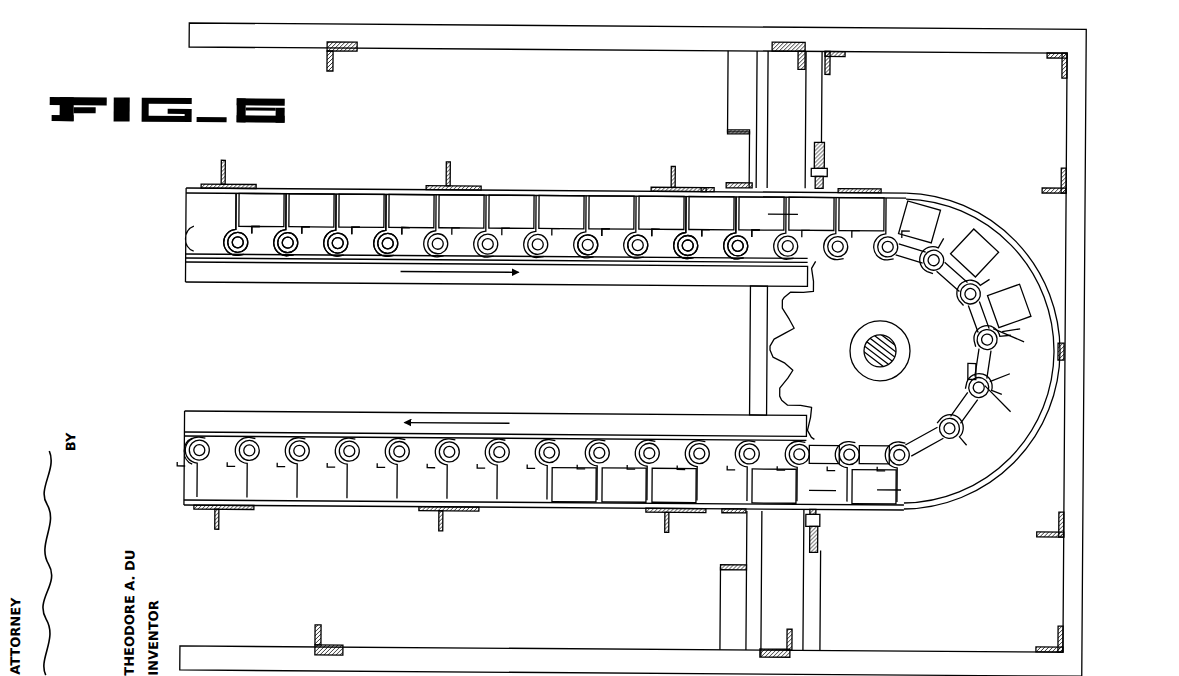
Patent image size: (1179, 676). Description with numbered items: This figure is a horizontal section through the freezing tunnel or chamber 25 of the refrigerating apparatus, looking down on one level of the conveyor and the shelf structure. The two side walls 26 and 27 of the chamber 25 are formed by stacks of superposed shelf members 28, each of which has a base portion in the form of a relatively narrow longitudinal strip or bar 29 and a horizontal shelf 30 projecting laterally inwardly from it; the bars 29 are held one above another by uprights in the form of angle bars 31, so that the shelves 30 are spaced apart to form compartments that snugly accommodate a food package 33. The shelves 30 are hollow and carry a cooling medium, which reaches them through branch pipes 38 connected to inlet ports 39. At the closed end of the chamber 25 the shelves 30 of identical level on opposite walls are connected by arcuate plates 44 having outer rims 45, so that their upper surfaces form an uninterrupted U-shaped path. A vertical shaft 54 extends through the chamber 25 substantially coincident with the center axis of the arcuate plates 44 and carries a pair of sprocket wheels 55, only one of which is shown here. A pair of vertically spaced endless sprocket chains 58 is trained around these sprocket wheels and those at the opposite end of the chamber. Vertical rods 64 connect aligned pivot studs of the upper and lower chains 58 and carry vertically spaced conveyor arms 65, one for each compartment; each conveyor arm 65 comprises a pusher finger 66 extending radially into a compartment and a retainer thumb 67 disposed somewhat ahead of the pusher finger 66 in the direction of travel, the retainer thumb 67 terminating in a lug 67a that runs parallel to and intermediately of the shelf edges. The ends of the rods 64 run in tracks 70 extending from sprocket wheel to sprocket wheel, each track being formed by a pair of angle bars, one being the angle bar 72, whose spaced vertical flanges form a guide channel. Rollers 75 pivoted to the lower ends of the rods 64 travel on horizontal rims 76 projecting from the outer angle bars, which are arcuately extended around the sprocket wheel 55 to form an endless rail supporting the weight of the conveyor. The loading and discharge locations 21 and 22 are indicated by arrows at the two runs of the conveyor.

The loading station 21 is at (782, 194).
The discharge station 22 is at (890, 484).
The freezing tunnel or chamber 25 is at (528, 352).
The side wall 26 is at (554, 186).
The side wall 27 is at (566, 508).
The shelf member 28 is at (212, 208).
The longitudinal strip or bar 29 is at (355, 189).
The horizontal shelf 30 is at (400, 203).
The angle bar upright 31 is at (215, 184).
The food package 33 is at (305, 202).
The branch pipe 38 is at (823, 149).
The inlet port 39 is at (827, 183).
The arcuate plate 44 is at (1017, 257).
The outer rim 45 is at (1025, 438).
The shaft 54 is at (890, 347).
The sprocket wheel 55 is at (787, 358).
The endless sprocket chain 58 is at (213, 252).
The vertical rod 64 is at (662, 249).
The conveyor arm 65 is at (747, 255).
The pusher finger 66 is at (291, 255).
The retainer thumb 67 is at (400, 251).
The lug 67a is at (707, 230).
The track 70 is at (545, 263).
The angle bar 72 is at (565, 272).
The roller 75 is at (1007, 387).
The horizontal rim 76 is at (968, 367).